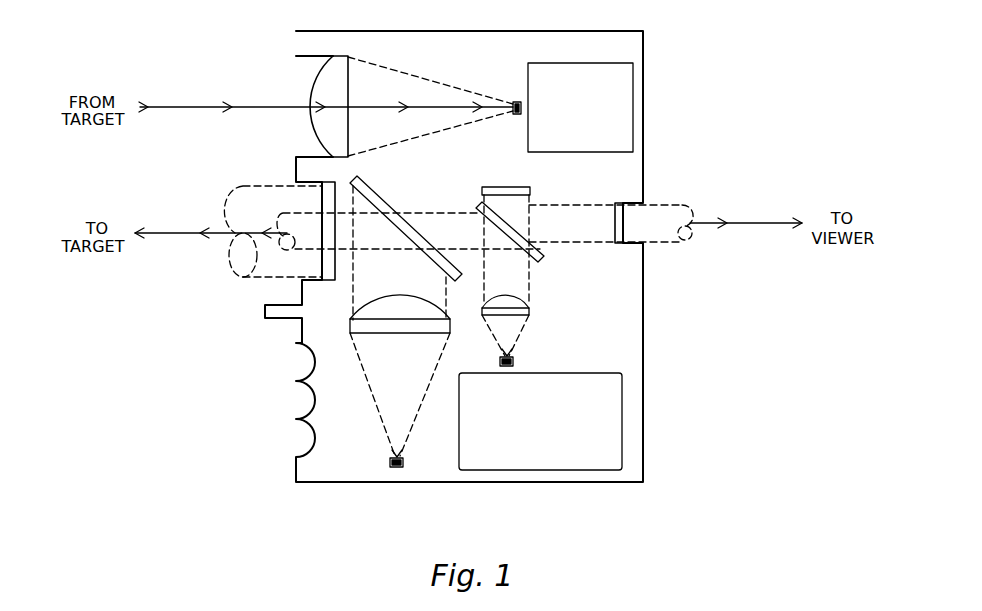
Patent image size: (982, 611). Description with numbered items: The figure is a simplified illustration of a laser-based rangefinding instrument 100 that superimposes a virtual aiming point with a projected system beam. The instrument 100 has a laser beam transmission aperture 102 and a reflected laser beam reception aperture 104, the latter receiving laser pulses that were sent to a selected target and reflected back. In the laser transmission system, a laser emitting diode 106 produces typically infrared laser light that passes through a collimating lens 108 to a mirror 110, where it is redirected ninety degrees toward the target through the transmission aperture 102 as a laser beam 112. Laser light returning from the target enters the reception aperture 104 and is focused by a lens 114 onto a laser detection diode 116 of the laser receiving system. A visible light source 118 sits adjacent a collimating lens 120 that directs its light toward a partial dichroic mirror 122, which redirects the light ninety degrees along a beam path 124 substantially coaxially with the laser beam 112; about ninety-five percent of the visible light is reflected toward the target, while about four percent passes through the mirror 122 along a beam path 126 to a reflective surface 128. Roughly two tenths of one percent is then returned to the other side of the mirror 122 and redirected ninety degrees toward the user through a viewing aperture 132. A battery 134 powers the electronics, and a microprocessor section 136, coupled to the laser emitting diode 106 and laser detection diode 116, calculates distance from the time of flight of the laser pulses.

The laser-based rangefinding instrument 100 is at (484, 522).
The laser beam transmission aperture 102 is at (309, 264).
The reflected laser beam reception aperture 104 is at (301, 133).
The laser emitting diode 106 is at (390, 462).
The collimating lens 108 is at (350, 327).
The mirror 110 is at (378, 196).
The laser beam 112 is at (226, 203).
The lens 114 is at (350, 63).
The laser detection diode 116 is at (514, 103).
The visible light source 118 is at (513, 362).
The collimating lens 120 is at (530, 311).
The partial (dichroic) mirror 122 is at (477, 207).
The beam path 124 is at (283, 216).
The beam path 126 is at (531, 213).
The reflective surface 128 is at (514, 187).
The viewing aperture 132 is at (616, 243).
The battery 134 is at (590, 373).
The microprocessor section 136 is at (591, 63).